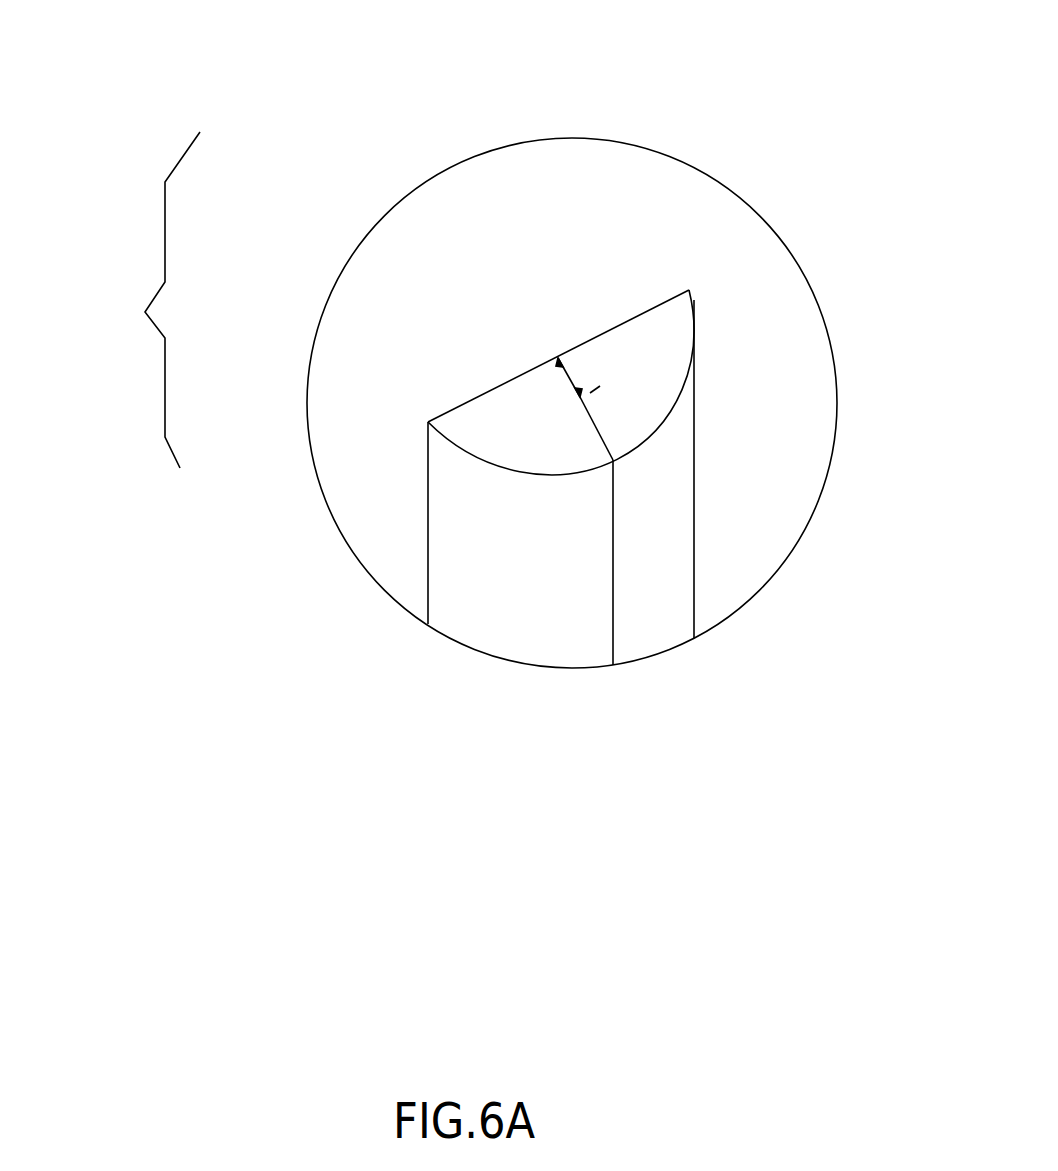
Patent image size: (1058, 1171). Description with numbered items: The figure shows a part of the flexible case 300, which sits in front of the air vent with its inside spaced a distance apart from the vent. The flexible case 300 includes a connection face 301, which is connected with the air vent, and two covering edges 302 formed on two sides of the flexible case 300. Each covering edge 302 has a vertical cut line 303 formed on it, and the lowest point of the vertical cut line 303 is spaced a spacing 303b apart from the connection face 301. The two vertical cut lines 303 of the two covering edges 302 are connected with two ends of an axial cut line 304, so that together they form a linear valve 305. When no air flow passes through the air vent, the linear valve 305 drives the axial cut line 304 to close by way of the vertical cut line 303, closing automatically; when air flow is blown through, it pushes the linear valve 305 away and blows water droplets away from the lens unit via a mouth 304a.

The flexible case 300 is at (450, 648).
The connection face 301 is at (648, 306).
The covering edge 302 is at (550, 447).
The vertical cut line 303 is at (597, 425).
The spacing 303b is at (573, 388).
The axial cut line 304 is at (613, 533).
The mouth 304a is at (590, 393).
The linear valve 305 is at (128, 300).